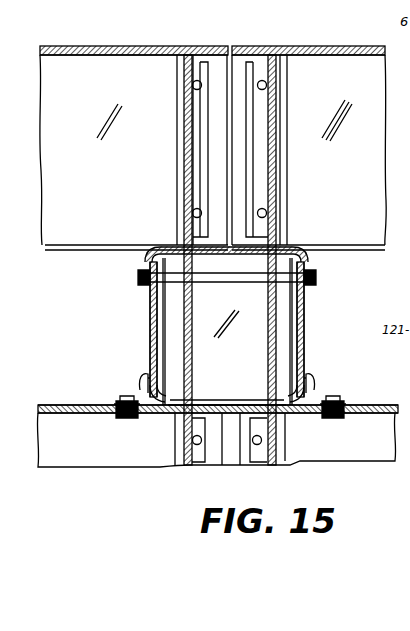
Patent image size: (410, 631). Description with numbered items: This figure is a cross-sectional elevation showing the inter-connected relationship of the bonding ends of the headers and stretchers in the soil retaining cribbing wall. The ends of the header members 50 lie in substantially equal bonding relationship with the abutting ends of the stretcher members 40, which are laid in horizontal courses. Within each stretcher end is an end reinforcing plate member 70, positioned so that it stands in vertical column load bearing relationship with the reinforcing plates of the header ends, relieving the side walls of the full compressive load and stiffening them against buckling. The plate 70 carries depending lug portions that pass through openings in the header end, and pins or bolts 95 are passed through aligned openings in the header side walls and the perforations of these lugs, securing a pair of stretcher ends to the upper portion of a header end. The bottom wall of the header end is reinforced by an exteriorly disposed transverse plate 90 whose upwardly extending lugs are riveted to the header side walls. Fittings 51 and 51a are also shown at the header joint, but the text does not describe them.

The header member 50 is at (100, 50).
The end reinforcing plate member 70 is at (193, 212).
The stretcher member 40 is at (150, 320).
The pin or bolt 95 is at (212, 284).
The transverse plate 90 is at (258, 356).
The clip 51 is at (130, 396).
The clip base 51a is at (118, 419).